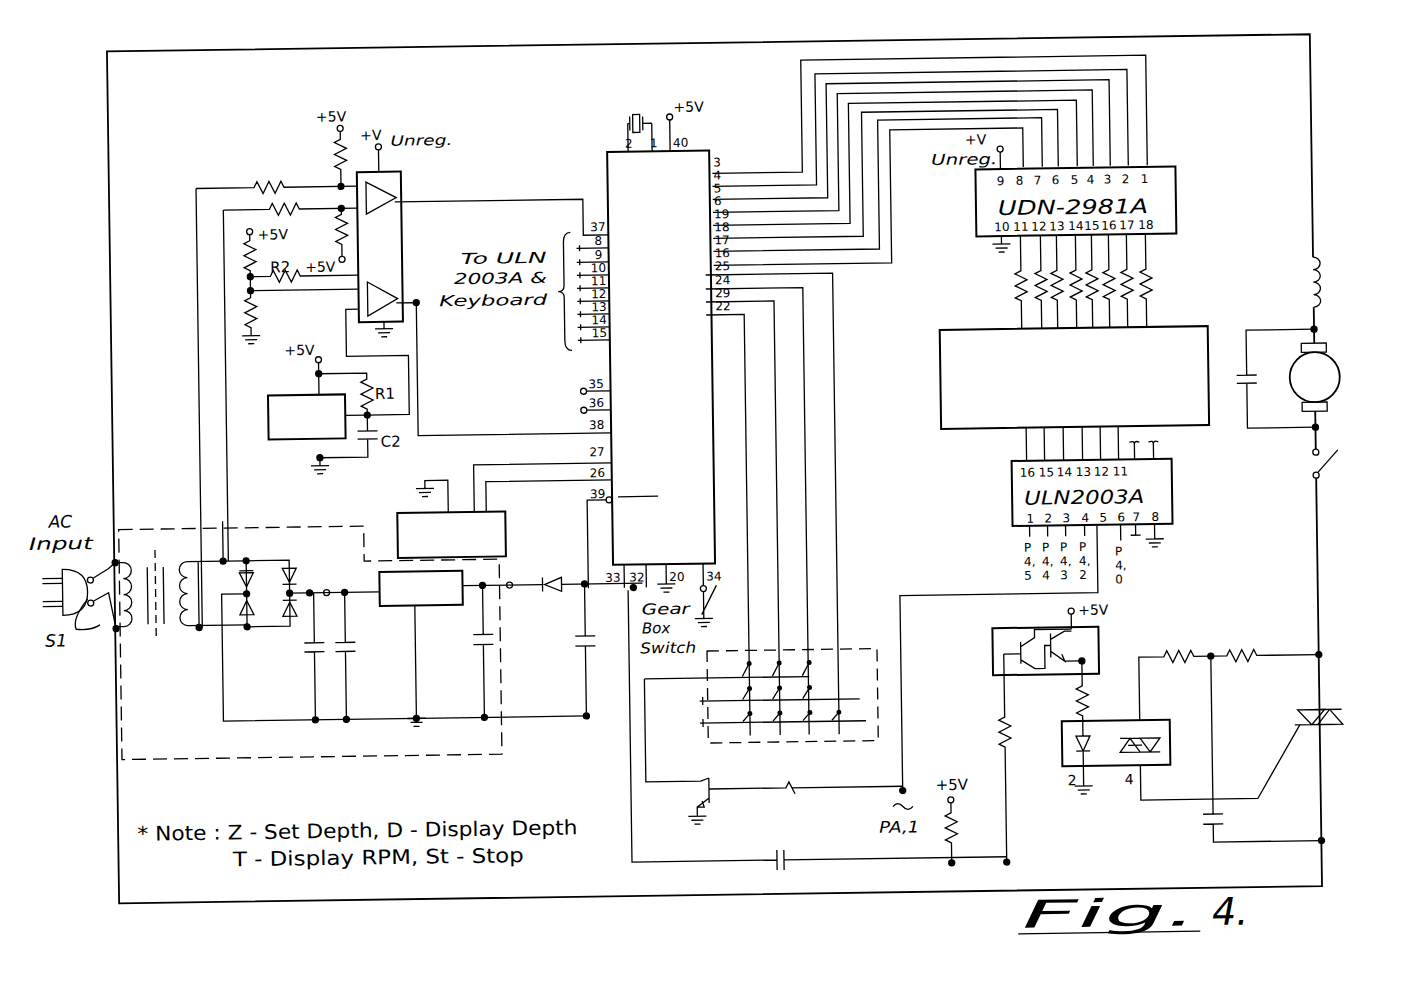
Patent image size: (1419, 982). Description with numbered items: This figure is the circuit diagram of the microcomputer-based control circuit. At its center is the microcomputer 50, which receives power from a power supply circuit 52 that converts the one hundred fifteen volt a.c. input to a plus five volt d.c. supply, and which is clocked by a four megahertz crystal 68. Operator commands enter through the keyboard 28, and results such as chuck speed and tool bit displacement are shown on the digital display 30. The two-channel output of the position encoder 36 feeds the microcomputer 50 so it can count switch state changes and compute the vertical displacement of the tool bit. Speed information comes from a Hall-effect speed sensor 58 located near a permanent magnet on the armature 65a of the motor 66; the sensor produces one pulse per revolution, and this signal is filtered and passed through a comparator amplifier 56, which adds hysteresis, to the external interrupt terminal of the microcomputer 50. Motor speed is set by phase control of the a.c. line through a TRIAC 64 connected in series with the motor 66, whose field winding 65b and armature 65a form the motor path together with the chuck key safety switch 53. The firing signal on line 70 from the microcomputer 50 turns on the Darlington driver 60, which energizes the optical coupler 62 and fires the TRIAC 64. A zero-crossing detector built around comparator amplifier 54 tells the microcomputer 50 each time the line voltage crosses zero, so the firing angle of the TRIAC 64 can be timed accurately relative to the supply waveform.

The keyboard 28 is at (864, 650).
The digital display 30 is at (1196, 327).
The position encoder 36 is at (503, 538).
The microcomputer 50 is at (702, 152).
The power supply circuit 52 is at (358, 762).
The chuck key safety switch 53 is at (1329, 481).
The comparator amplifier 54 is at (400, 176).
The comparator amplifier 56 is at (397, 285).
The speed sensor 58 is at (275, 393).
The Darlington driver 60 is at (1100, 648).
The optical coupler 62 is at (1062, 754).
The TRIAC 64 is at (1309, 735).
The armature 65a is at (1339, 401).
The field winding 65b is at (1319, 266).
The motor 66 is at (1342, 365).
The crystal 68 is at (630, 122).
The line 70 is at (630, 760).